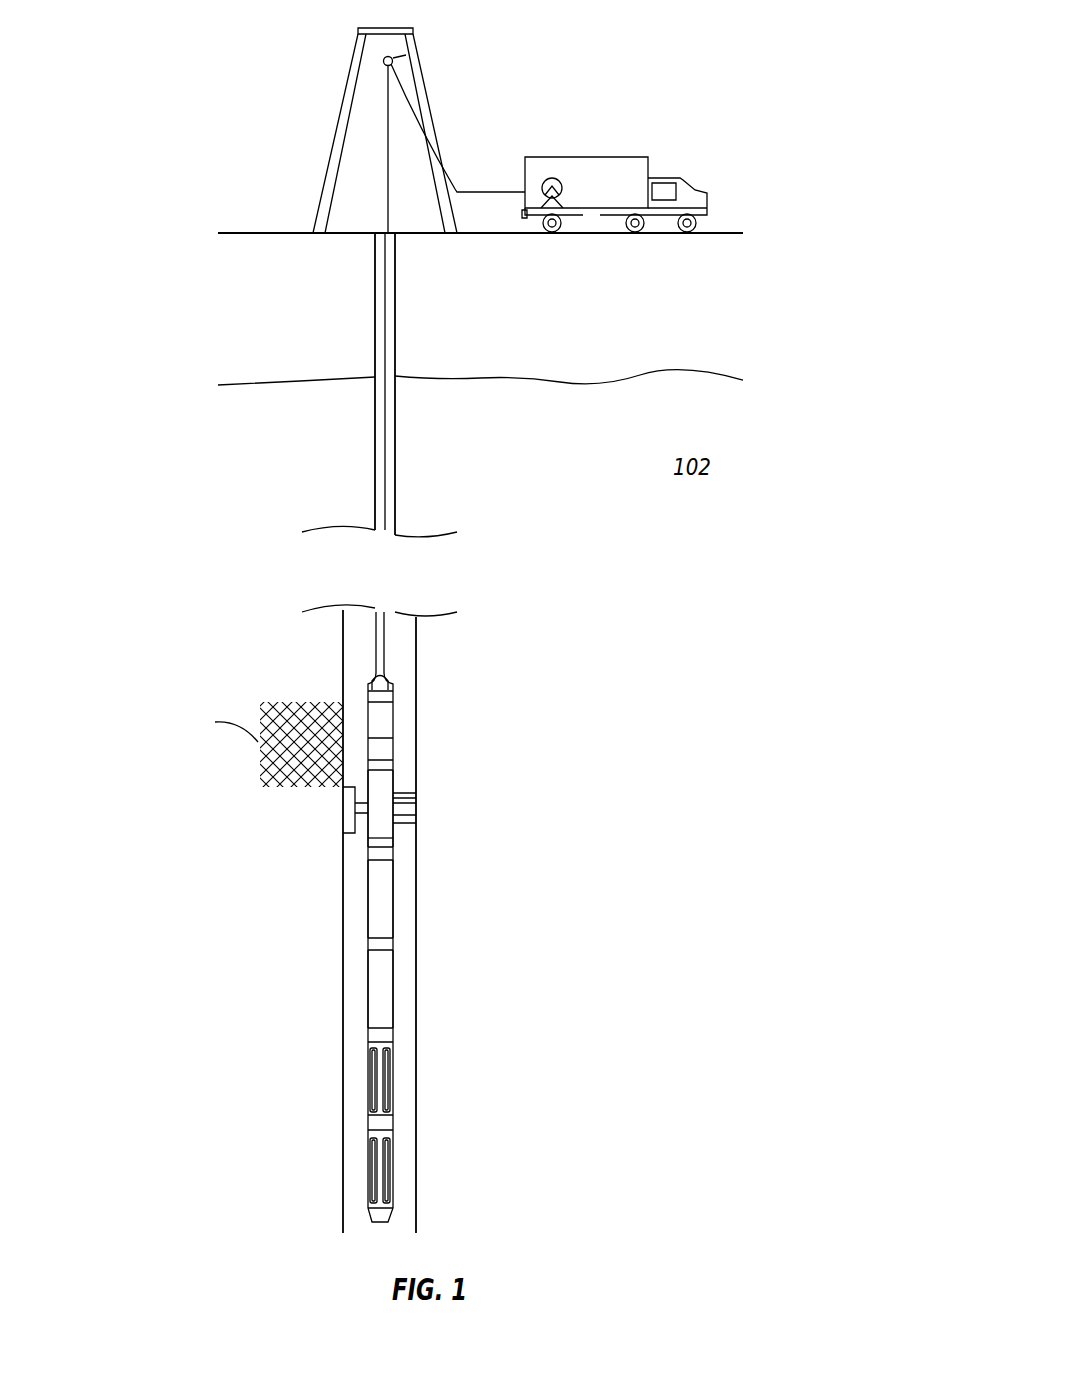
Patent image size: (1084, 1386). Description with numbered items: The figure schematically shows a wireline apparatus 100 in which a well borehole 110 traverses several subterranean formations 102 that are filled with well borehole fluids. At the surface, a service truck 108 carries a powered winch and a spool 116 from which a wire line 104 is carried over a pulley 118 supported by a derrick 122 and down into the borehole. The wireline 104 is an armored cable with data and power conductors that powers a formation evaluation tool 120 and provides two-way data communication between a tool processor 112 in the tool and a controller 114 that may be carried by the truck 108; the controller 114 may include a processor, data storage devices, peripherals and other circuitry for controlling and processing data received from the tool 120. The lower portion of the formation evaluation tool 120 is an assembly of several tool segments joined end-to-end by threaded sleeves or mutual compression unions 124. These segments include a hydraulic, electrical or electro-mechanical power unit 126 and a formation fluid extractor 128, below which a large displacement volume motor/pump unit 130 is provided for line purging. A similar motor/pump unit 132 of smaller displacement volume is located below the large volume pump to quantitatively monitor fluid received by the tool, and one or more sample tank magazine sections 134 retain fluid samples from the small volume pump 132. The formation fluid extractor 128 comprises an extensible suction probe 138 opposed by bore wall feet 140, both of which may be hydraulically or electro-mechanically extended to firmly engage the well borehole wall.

The wireline apparatus 100 is at (803, 1023).
The subterranean formations 102 is at (711, 479).
The wire line 104 is at (387, 492).
The service truck 108 is at (591, 166).
The well borehole 110 is at (397, 436).
The tool processor 112 is at (394, 748).
The controller 114 is at (660, 185).
The spool 116 is at (552, 178).
The pulley 118 is at (384, 61).
The formation evaluation tool 120 is at (393, 782).
The derrick 122 is at (331, 150).
The mutual compression unions 124 is at (387, 765).
The power unit 126 is at (382, 717).
The formation fluid extractor 128 is at (390, 838).
The large displacement volume motor/pump unit 130 is at (375, 905).
The small displacement volume motor/pump unit 132 is at (375, 989).
The sample tank magazine section 134 is at (380, 1080).
The extensible suction probe 138 is at (348, 806).
The bore wall feet 140 is at (404, 819).